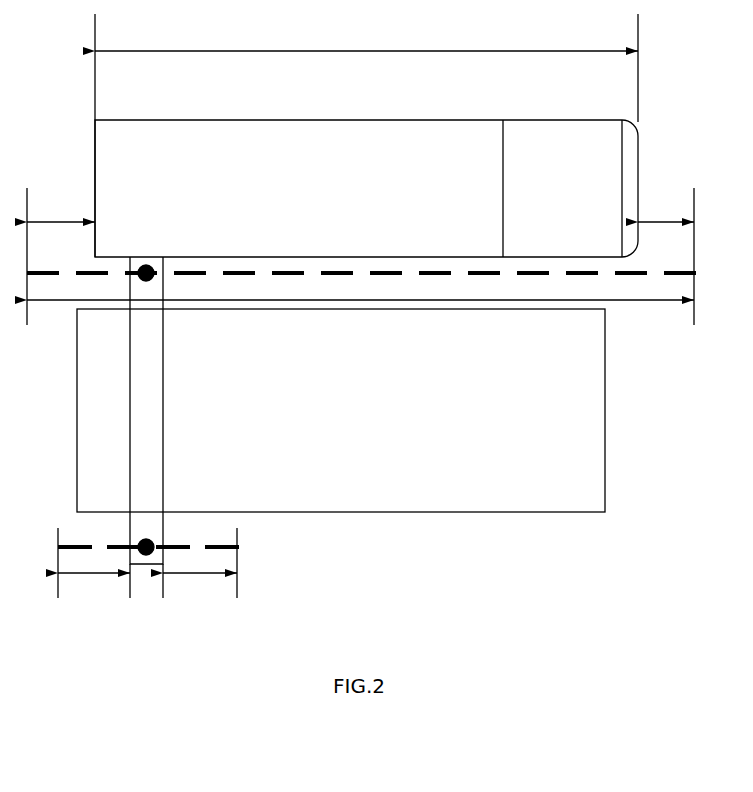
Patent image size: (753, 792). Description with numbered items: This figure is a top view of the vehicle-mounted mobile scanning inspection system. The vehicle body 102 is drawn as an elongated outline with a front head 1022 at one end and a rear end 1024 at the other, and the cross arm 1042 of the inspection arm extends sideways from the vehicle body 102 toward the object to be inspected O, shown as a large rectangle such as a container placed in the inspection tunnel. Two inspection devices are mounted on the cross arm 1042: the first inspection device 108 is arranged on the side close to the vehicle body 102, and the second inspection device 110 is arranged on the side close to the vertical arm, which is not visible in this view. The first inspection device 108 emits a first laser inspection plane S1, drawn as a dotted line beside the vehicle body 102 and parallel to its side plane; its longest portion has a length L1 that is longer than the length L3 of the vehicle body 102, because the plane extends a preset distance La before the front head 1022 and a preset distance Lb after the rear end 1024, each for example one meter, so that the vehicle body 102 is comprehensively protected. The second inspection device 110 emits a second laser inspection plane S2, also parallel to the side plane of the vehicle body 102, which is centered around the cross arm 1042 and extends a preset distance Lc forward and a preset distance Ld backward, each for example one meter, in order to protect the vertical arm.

The vehicle body 102 is at (332, 125).
The rear end 1024 is at (105, 125).
The front head 1022 is at (572, 127).
The cross arm 1042 is at (154, 388).
The first inspection device 108 is at (150, 268).
The second inspection device 110 is at (152, 542).
The object to be inspected O is at (586, 410).
The first laser inspection plane S1 is at (333, 272).
The second laser inspection plane S2 is at (229, 542).
The length of the vehicle body L3 is at (366, 37).
The length of the longest portion of the first laser inspection plane L1 is at (360, 311).
The preset distance before the front head La is at (666, 206).
The preset distance after the rear end Lb is at (61, 206).
The preset distance forward of the cross arm Lc is at (94, 590).
The preset distance backward of the cross arm Ld is at (200, 590).